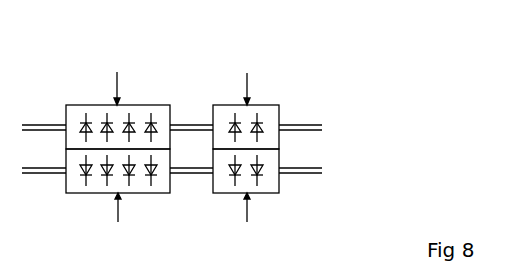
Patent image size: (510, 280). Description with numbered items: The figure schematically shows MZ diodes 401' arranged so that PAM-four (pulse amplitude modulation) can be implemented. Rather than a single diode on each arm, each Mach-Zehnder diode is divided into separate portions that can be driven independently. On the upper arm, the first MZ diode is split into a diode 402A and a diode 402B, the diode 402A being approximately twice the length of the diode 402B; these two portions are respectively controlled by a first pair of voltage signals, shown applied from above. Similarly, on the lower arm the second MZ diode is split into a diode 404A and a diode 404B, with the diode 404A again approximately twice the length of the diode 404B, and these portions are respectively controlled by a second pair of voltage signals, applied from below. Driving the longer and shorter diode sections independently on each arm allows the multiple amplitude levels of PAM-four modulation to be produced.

The MZ diodes 401' is at (217, 128).
The diode 402A is at (163, 108).
The diode 402B is at (270, 112).
The diode 404A is at (163, 180).
The diode 404B is at (277, 183).